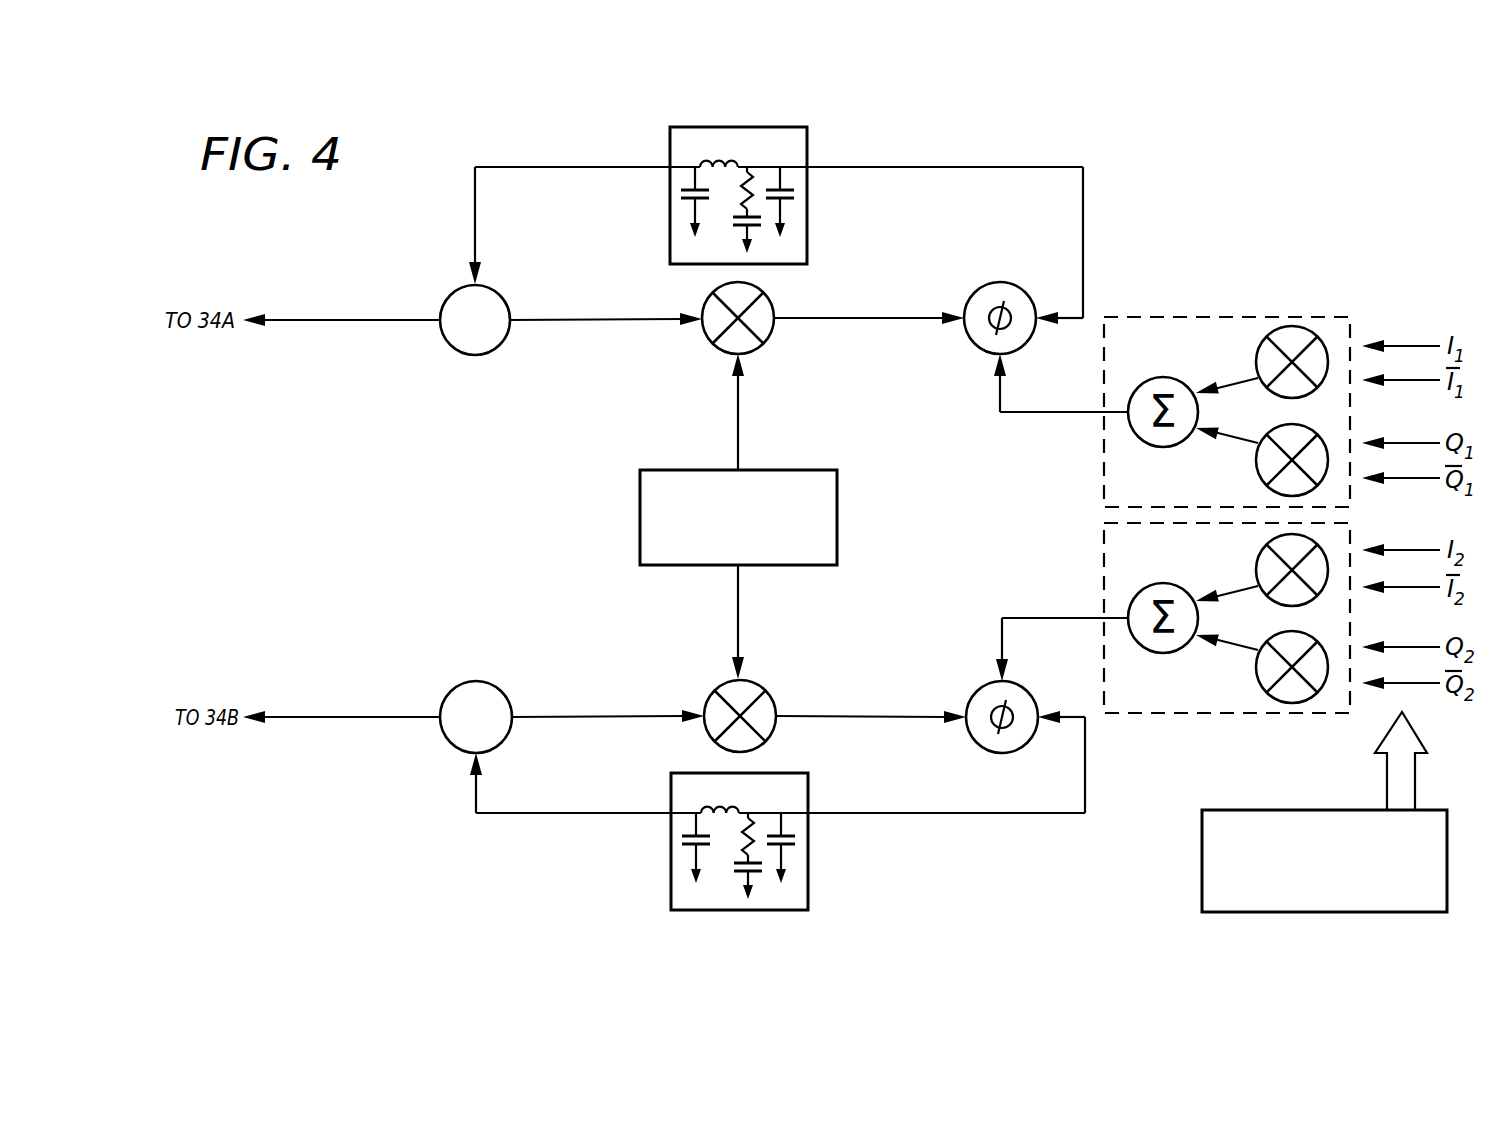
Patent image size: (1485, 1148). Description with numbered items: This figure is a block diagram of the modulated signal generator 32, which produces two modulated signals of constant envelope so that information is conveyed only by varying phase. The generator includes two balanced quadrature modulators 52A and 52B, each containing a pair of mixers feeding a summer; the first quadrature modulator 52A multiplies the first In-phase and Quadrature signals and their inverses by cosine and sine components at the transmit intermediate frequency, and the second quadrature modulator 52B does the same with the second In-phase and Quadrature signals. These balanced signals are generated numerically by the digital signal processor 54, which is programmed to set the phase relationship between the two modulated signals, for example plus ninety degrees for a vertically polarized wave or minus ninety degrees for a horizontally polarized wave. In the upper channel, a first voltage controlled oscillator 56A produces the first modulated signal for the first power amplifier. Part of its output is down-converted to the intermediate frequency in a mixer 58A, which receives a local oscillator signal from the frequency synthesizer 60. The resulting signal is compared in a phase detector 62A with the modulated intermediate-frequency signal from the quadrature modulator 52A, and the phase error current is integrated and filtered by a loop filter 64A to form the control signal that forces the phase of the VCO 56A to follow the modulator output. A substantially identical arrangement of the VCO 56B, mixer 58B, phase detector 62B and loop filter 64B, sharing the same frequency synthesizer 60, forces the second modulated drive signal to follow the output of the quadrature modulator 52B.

The modulated signal generator 32 is at (344, 894).
The quadrature modulator 52A is at (1225, 317).
The quadrature modulator 52B is at (1235, 713).
The digital signal processor 54 is at (1325, 912).
The first voltage controlled oscillator 56A is at (475, 355).
The voltage controlled oscillator 56B is at (476, 681).
The mixer 58A is at (768, 340).
The mixer 58B is at (772, 696).
The frequency synthesizer 60 is at (837, 518).
The phase detector 62A is at (1000, 283).
The phase detector 62B is at (1002, 753).
The loop filter 64A is at (740, 127).
The loop filter 64B is at (740, 910).